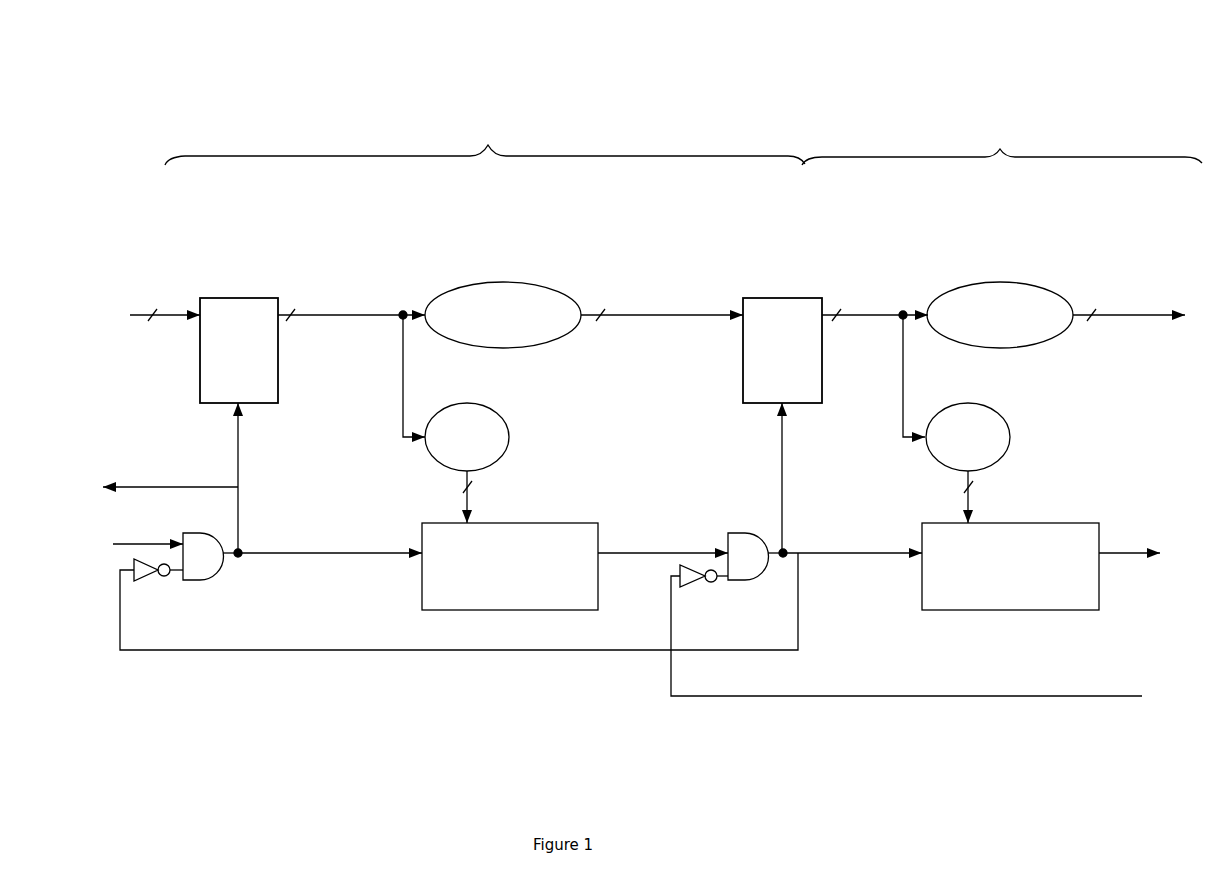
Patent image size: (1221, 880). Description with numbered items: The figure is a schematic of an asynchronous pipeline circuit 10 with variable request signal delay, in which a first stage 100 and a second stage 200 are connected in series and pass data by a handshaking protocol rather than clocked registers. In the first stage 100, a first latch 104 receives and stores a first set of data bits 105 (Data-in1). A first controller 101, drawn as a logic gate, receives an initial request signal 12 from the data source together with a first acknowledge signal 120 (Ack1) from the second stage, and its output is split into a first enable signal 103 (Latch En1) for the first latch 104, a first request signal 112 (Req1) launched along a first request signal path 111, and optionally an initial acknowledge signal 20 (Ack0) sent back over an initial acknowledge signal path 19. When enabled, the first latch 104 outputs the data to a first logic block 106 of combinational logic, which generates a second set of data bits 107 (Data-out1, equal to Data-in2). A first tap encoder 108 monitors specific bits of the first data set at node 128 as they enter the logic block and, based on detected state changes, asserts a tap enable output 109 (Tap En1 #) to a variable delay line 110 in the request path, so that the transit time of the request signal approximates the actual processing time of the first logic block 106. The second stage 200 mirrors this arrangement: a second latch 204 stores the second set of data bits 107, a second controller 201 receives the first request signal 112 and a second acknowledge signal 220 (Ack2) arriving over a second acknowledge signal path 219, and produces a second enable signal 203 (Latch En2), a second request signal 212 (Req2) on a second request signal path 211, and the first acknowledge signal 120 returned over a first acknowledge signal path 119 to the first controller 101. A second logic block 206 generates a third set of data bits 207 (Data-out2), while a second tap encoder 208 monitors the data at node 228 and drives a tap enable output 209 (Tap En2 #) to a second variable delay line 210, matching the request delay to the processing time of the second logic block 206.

The asynchronous pipeline circuit 10 is at (172, 52).
The first stage 100 is at (485, 141).
The second stage 200 is at (1002, 143).
The first latch 104 is at (244, 296).
The first set of data bits 105 is at (327, 296).
The node 128 is at (402, 310).
The first logic block 106 is at (502, 283).
The second set of data bits 107 is at (646, 291).
The second latch 204 is at (786, 296).
The node 228 is at (909, 302).
The second logic block 206 is at (997, 283).
The third set of data bits 207 is at (1136, 290).
The first tap encoder 108 is at (455, 404).
The second tap encoder 208 is at (956, 404).
The Tap En1 # signal 109 is at (392, 498).
The Tap En2 # signal 209 is at (1048, 497).
The variable delay line 110 is at (578, 522).
The variable delay line 210 is at (1078, 521).
The first enable signal 103 is at (318, 431).
The second enable signal 203 is at (862, 433).
The initial acknowledge signal path 19 is at (160, 485).
The initial acknowledge signal 20 is at (82, 470).
The first controller 101 is at (199, 533).
The second controller 201 is at (741, 533).
The initial request signal 12 is at (90, 558).
The first request signal path 111 is at (296, 552).
The first request signal 112 is at (335, 526).
The first acknowledge signal path 119 is at (471, 652).
The first acknowledge signal 120 is at (330, 632).
The second request signal path 211 is at (833, 551).
The second request signal 212 is at (881, 526).
The second acknowledge signal path 219 is at (758, 698).
The second acknowledge signal 220 is at (838, 668).